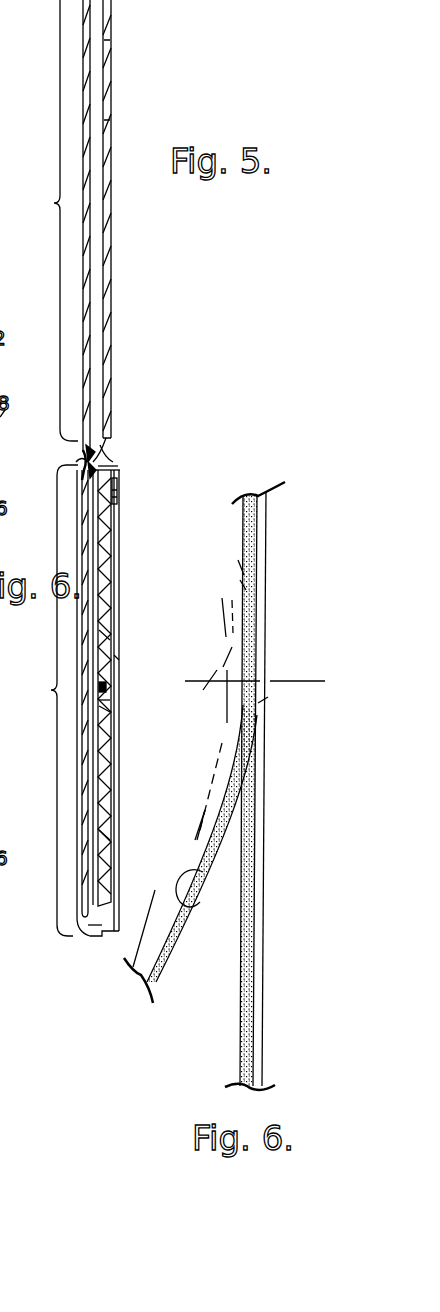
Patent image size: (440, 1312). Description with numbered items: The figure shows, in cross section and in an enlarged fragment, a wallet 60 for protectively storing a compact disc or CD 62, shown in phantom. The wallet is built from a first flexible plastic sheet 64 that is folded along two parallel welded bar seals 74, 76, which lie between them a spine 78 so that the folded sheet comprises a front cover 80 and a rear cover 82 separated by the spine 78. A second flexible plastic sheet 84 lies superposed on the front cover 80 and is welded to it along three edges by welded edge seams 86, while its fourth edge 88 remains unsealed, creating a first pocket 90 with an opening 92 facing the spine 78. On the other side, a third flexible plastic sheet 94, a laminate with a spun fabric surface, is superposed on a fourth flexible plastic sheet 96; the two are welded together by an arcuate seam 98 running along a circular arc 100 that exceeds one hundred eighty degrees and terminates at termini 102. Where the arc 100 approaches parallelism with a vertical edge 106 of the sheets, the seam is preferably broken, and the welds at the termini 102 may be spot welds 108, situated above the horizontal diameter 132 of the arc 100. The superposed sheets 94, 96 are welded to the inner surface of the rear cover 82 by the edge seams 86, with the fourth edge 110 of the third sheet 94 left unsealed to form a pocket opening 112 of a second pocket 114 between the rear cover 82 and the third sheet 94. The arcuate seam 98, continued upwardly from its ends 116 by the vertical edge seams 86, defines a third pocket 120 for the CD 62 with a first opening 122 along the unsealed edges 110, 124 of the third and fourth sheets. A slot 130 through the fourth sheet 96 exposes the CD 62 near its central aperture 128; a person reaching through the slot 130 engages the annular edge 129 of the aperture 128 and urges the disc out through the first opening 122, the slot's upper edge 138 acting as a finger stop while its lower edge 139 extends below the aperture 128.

In FIG. 5, the wallet 60 is at (131, 62).
In FIG. 5, the CD 62 is at (100, 640).
In FIG. 6, the CD 62 is at (195, 840).
In FIG. 5, the first flexible plastic panel or sheet 64 is at (80, 143).
In FIG. 5, the bar seal 74 is at (73, 440).
In FIG. 5, the bar seal 76 is at (72, 463).
In FIG. 5, the spine 78 is at (77, 457).
In FIG. 5, the front cover 80 is at (51, 220).
In FIG. 5, the rear cover 82 is at (50, 700).
In FIG. 5, the second flexible plastic panel or sheet 84 is at (110, 248).
In FIG. 5, the welded edge seams 86 is at (85, 936).
In FIG. 6, the welded edge seams 86 is at (255, 926).
In FIG. 5, the fourth edge 88 is at (108, 438).
In FIG. 5, the first pocket 90 is at (97, 260).
In FIG. 5, the opening 92 is at (114, 461).
In FIG. 5, the third flexible plastic panel or sheet 94 is at (110, 546).
In FIG. 5, the fourth flexible plastic panel or sheet 96 is at (118, 582).
In FIG. 6, the arcuate seam 98 is at (186, 945).
In FIG. 6, the circular arc 100 is at (200, 918).
In FIG. 6, the termini 102 is at (243, 582).
In FIG. 6, the vertical edge 106 is at (263, 858).
In FIG. 6, the spot welds 108 is at (243, 585).
In FIG. 5, the fourth edge 110 is at (80, 483).
In FIG. 5, the pocket opening 112 is at (87, 520).
In FIG. 5, the second pocket 114 is at (88, 600).
In FIG. 6, the ends 116 is at (263, 700).
In FIG. 5, the third pocket 120 is at (103, 702).
In FIG. 5, the first opening 122 is at (120, 457).
In FIG. 5, the unsealed fourth edge 124 is at (117, 467).
In FIG. 5, the central aperture 128 is at (108, 692).
In FIG. 5, the annular edge 129 is at (103, 712).
In FIG. 5, the opening or slot 130 is at (118, 662).
In FIG. 6, the horizontal diameter 132 is at (294, 680).
In FIG. 5, the upper edge of the slot 138 is at (115, 507).
In FIG. 5, the lower edge of the slot 139 is at (100, 835).